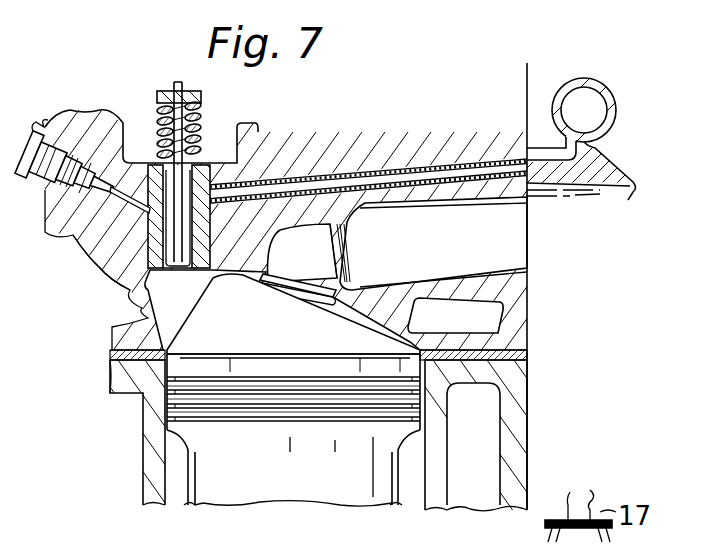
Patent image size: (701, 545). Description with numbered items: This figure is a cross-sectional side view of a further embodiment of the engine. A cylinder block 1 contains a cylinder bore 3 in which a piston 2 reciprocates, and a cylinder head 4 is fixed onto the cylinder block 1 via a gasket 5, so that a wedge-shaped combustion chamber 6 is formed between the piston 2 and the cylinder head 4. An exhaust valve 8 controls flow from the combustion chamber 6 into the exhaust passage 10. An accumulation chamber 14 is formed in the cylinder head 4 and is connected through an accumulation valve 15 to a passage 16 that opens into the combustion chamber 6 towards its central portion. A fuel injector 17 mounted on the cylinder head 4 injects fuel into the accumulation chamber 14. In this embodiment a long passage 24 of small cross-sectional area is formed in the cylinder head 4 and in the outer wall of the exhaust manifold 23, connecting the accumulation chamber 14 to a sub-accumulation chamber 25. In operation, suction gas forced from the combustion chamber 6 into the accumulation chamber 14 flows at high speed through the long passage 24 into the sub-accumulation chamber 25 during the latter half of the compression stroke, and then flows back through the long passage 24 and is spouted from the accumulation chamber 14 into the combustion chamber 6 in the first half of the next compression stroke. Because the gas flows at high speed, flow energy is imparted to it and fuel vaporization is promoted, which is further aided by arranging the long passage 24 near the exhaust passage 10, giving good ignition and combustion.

The cylinder block 1 is at (522, 432).
The piston 2 is at (375, 498).
The cylinder bore 3 is at (420, 498).
The cylinder head 4 is at (273, 140).
The gasket 5 is at (527, 354).
The combustion chamber 6 is at (257, 330).
The exhaust valve 8 is at (332, 250).
The exhaust passage 10 is at (471, 248).
The accumulation chamber 14 is at (130, 248).
The accumulation valve 15 is at (148, 160).
The passage 16 is at (147, 310).
The fuel injector 17 is at (50, 130).
The exhaust manifold 23 is at (576, 280).
The long passage 24 is at (392, 172).
The sub-accumulation chamber 25 is at (590, 90).